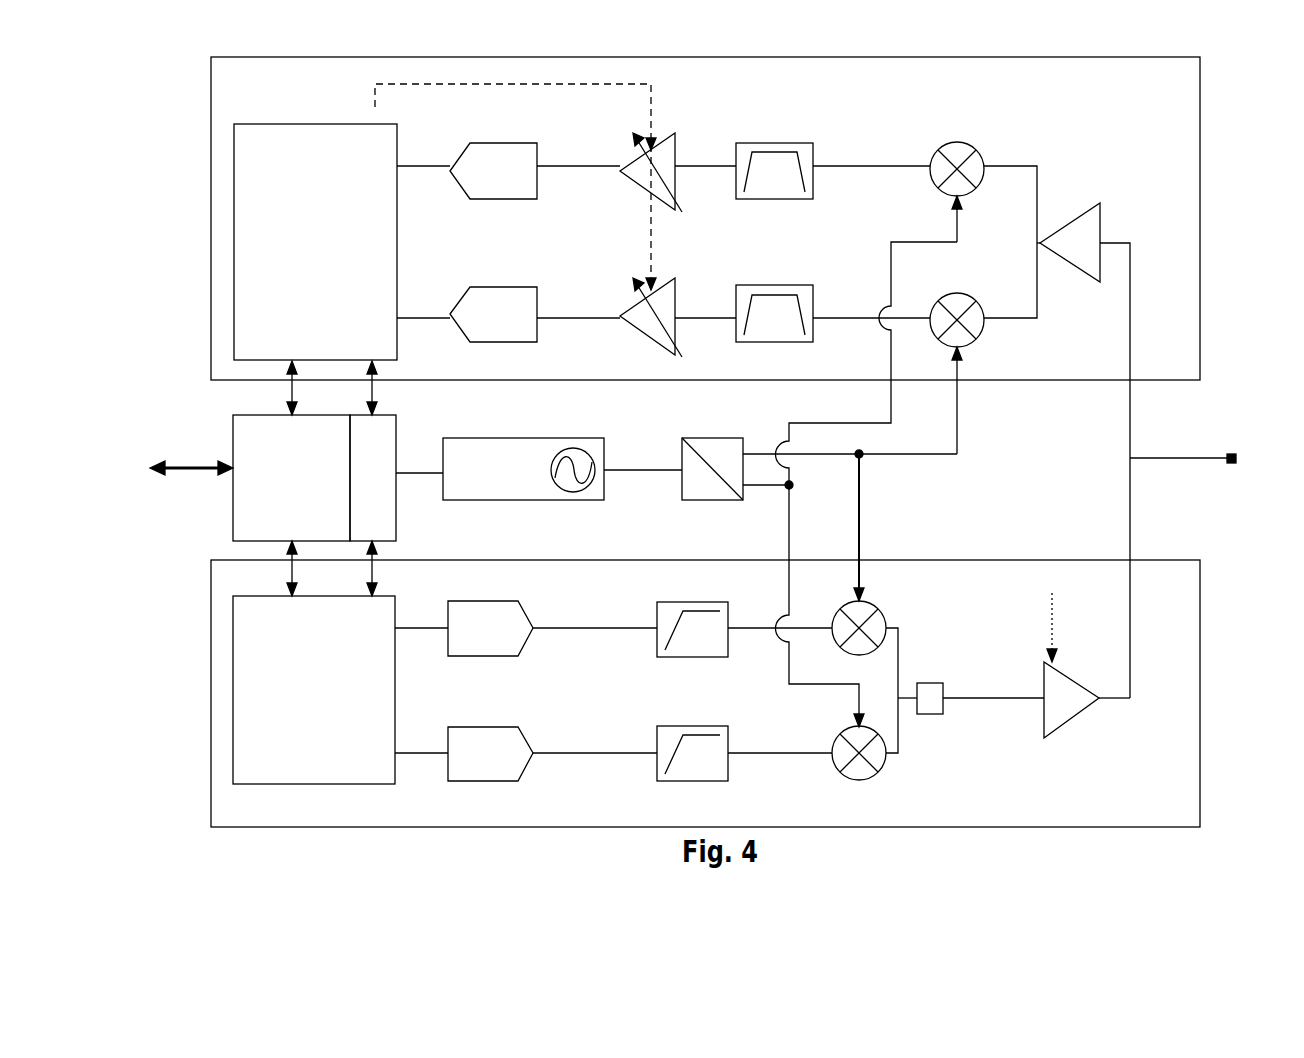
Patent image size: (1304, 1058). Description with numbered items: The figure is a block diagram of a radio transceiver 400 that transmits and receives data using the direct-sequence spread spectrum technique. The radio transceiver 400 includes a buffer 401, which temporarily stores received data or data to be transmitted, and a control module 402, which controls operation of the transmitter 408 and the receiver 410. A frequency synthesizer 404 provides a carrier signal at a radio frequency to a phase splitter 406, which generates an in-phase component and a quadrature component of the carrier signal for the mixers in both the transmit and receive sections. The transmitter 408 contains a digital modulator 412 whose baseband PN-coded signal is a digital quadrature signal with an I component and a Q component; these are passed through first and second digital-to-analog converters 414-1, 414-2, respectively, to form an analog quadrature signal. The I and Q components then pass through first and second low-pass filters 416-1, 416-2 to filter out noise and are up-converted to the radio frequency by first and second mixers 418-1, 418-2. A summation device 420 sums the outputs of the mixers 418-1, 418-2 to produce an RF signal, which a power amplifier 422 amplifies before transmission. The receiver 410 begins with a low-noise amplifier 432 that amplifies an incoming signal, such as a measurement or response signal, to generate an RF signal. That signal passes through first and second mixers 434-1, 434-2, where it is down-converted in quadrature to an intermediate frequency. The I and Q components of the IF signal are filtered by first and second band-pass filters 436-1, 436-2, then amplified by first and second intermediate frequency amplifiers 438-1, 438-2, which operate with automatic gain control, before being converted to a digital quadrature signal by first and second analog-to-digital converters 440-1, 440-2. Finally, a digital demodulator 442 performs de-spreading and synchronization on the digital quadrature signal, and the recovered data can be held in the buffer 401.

The radio transceiver 400 is at (708, 44).
The buffer 401 is at (238, 416).
The control module 402 is at (398, 428).
The frequency synthesizer 404 is at (533, 438).
The phase splitter 406 is at (695, 438).
The transmitter 408 is at (1201, 720).
The receiver 410 is at (1201, 283).
The digital modulator 412 is at (397, 598).
The first digital-to-analog converter 414-1 is at (530, 606).
The second digital-to-analog converter 414-2 is at (533, 752).
The first low-pass filter 416-1 is at (676, 601).
The second low-pass filter 416-2 is at (670, 725).
The first mixer 418-1 is at (870, 602).
The second mixer 418-2 is at (868, 780).
The summation device 420 is at (935, 715).
The power amplifier 422 is at (1052, 662).
The low-noise amplifier 432 is at (1103, 225).
The first mixer 434-1 is at (968, 294).
The second mixer 434-2 is at (965, 148).
The first band-pass filter 436-1 is at (797, 285).
The second band-pass filter 436-2 is at (797, 143).
The first intermediate frequency amplifier 438-1 is at (677, 291).
The second intermediate frequency amplifier 438-2 is at (677, 138).
The first analog-to-digital converter 440-1 is at (540, 302).
The second analog-to-digital converter 440-2 is at (540, 160).
The digital demodulator 442 is at (250, 124).